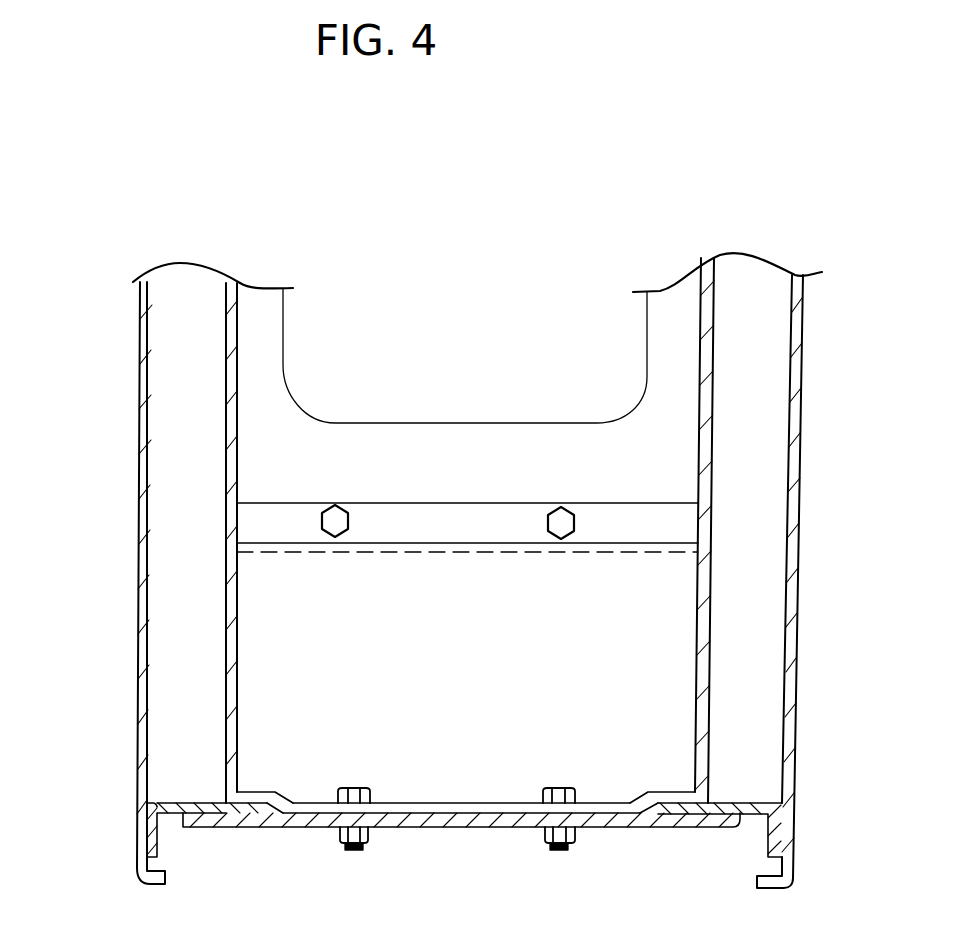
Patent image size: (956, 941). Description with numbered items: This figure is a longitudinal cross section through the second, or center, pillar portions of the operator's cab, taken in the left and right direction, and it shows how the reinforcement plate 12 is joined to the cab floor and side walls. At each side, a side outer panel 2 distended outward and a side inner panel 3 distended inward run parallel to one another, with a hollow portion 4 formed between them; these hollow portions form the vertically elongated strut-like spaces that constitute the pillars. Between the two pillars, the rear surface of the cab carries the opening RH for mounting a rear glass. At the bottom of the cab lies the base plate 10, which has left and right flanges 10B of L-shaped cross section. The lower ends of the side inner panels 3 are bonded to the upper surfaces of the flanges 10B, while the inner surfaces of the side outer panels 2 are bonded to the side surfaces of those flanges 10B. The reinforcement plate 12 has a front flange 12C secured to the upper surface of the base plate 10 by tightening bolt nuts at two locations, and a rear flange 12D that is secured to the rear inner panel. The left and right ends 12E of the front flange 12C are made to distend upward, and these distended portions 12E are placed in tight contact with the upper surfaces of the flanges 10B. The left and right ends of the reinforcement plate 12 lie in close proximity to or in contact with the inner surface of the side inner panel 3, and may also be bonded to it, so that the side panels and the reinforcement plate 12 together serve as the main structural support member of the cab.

The side outer panel 2 is at (139, 433).
The side inner panel 3 is at (227, 397).
The hollow portion 4 is at (162, 342).
The opening for mounting a rear glass RH is at (283, 368).
The base plate 10 is at (464, 872).
The left and right flanges of the base plate 10B is at (170, 817).
The reinforcement plate 12 is at (378, 599).
The front flange 12C is at (457, 803).
The rear flange 12D is at (580, 521).
The distended portions 12E is at (260, 790).